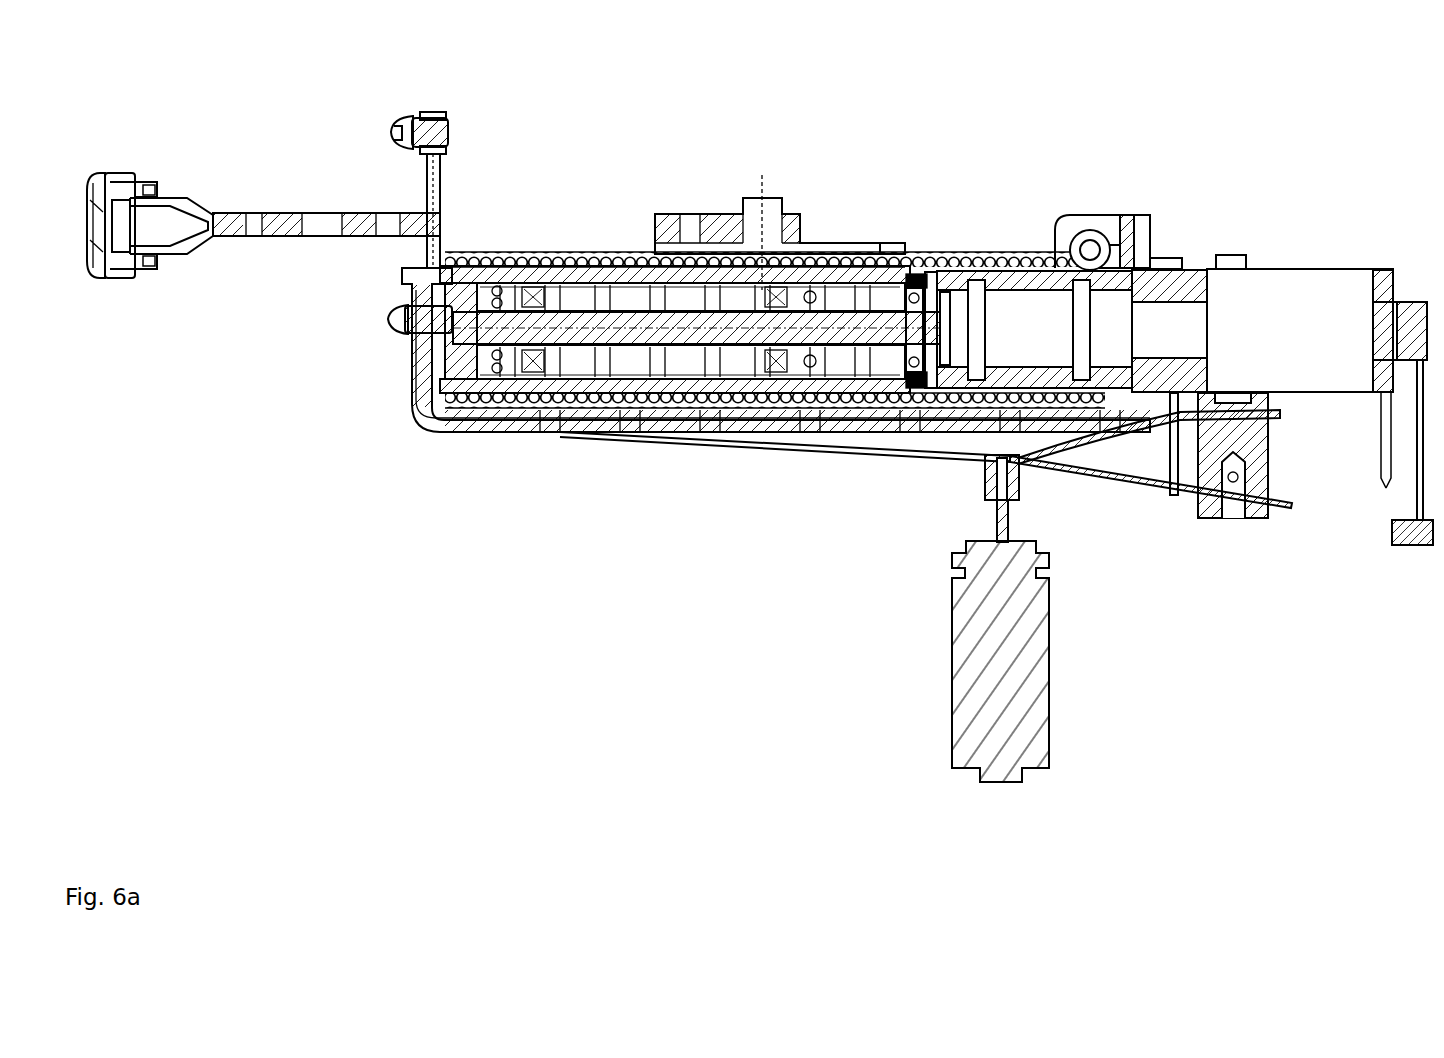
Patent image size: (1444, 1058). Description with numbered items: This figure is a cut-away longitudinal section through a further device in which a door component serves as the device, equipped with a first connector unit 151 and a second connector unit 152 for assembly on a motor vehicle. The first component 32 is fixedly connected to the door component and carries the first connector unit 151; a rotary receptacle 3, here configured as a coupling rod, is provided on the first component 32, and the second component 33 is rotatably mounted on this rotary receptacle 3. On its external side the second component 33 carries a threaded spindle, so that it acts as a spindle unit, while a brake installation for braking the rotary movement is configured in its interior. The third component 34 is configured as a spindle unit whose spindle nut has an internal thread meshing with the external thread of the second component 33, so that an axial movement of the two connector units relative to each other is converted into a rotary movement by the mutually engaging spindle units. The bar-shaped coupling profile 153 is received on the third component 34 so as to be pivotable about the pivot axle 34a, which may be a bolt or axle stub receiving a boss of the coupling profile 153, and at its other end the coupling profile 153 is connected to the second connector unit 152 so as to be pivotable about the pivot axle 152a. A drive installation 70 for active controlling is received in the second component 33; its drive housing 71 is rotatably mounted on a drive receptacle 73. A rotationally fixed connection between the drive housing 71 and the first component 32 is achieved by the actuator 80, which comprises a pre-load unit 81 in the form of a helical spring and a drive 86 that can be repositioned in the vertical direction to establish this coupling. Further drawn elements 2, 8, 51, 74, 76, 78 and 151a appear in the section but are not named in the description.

The shaft 2 is at (552, 380).
The rotary receptacle 3 is at (618, 340).
The inner tube with bearings 8 is at (590, 380).
The first component 32 is at (425, 385).
The second component 33 is at (568, 252).
The third component 34 is at (800, 246).
The pivot axle 34a is at (758, 190).
The lower spring 51 is at (487, 432).
The drive installation 70 is at (1290, 200).
The drive housing 71 is at (1032, 262).
The drive receptacle 73 is at (920, 380).
The cylinder 74 is at (1010, 308).
The coupler 76 is at (890, 273).
The end cap 78 is at (1410, 318).
The actuator 80 is at (1264, 550).
The pre-load unit 81 is at (1106, 478).
The drive 86 is at (960, 672).
The first connector unit 151 is at (430, 114).
The screw head 151a is at (393, 117).
The second connector unit 152 is at (152, 168).
The pivot axle 152a is at (150, 272).
The coupling profile 153 is at (283, 212).